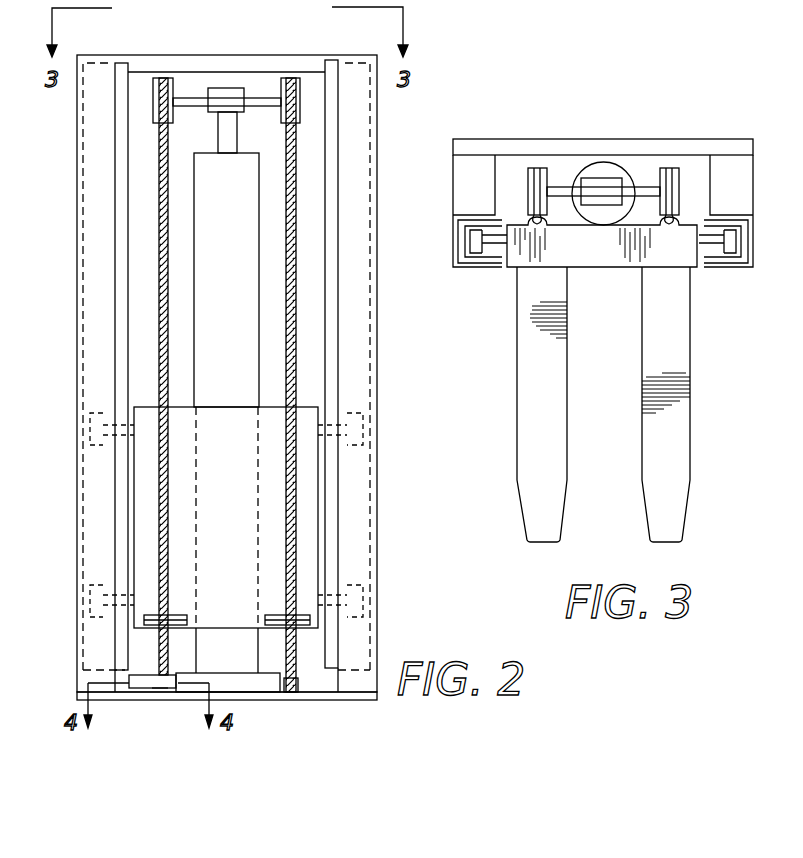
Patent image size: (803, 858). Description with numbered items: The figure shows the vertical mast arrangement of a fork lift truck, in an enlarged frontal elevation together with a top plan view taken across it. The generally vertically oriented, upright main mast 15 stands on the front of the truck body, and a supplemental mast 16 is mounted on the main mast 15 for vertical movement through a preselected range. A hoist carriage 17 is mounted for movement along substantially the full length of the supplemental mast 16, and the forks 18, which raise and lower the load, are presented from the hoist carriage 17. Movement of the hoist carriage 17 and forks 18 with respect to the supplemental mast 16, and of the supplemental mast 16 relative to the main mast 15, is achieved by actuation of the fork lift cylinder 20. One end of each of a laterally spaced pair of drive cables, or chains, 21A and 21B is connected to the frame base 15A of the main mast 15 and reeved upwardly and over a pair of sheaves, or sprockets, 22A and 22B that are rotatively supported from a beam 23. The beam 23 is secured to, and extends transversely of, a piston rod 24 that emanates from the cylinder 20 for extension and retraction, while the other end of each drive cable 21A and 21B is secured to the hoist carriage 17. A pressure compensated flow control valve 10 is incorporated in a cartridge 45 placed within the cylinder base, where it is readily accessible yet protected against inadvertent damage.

In FIG. 2, the pressure compensated flow control valve 10 is at (146, 668).
In FIG. 2, the main mast 15 is at (98, 130).
In FIG. 3, the main mast 15 is at (472, 163).
In FIG. 2, the frame base 15A is at (258, 700).
In FIG. 2, the supplemental mast 16 is at (122, 70).
In FIG. 3, the supplemental mast 16 is at (502, 257).
In FIG. 2, the hoist carriage 17 is at (232, 456).
In FIG. 3, the hoist carriage 17 is at (592, 262).
In FIG. 2, the forks 18 is at (163, 615).
In FIG. 3, the forks 18 is at (567, 462).
In FIG. 2, the fork lift cylinder 20 is at (236, 244).
In FIG. 3, the fork lift cylinder 20 is at (615, 162).
In FIG. 2, the drive cable 21A is at (160, 228).
In FIG. 3, the drive cable 21A is at (535, 168).
In FIG. 2, the drive cable 21B is at (293, 163).
In FIG. 3, the drive cable 21B is at (668, 168).
In FIG. 2, the sheave 22A is at (177, 78).
In FIG. 3, the sheave 22A is at (548, 177).
In FIG. 2, the sheave 22B is at (303, 90).
In FIG. 3, the sheave 22B is at (680, 177).
In FIG. 2, the beam 23 is at (258, 97).
In FIG. 3, the beam 23 is at (648, 186).
In FIG. 2, the piston rod 24 is at (225, 133).
In FIG. 2, the cartridge 45 is at (176, 668).